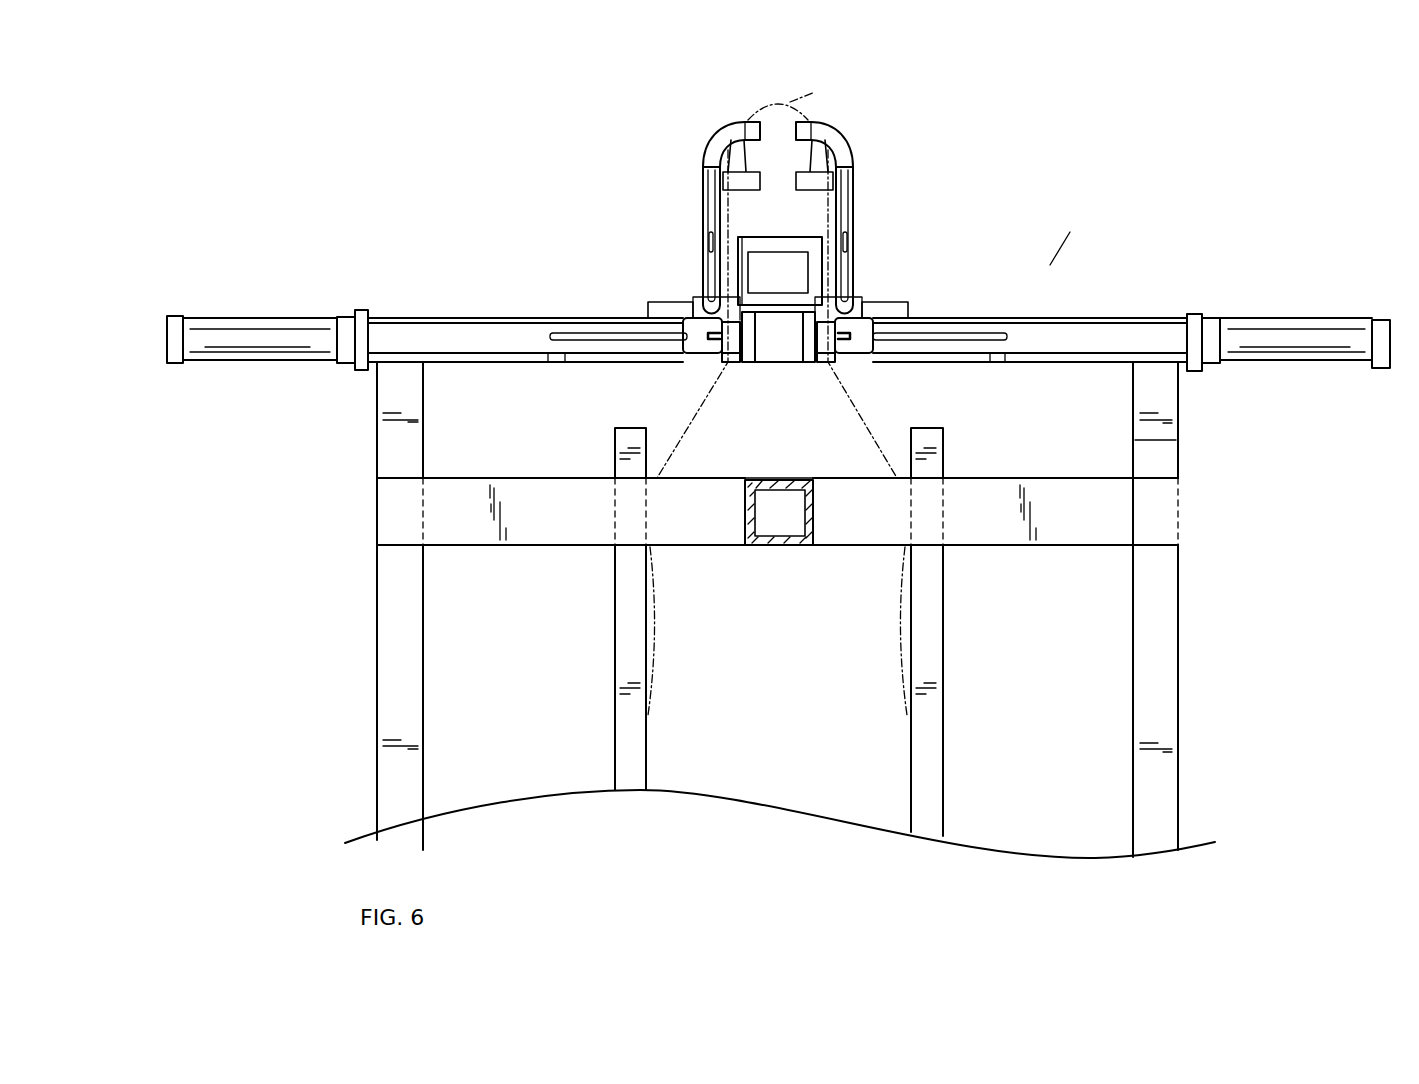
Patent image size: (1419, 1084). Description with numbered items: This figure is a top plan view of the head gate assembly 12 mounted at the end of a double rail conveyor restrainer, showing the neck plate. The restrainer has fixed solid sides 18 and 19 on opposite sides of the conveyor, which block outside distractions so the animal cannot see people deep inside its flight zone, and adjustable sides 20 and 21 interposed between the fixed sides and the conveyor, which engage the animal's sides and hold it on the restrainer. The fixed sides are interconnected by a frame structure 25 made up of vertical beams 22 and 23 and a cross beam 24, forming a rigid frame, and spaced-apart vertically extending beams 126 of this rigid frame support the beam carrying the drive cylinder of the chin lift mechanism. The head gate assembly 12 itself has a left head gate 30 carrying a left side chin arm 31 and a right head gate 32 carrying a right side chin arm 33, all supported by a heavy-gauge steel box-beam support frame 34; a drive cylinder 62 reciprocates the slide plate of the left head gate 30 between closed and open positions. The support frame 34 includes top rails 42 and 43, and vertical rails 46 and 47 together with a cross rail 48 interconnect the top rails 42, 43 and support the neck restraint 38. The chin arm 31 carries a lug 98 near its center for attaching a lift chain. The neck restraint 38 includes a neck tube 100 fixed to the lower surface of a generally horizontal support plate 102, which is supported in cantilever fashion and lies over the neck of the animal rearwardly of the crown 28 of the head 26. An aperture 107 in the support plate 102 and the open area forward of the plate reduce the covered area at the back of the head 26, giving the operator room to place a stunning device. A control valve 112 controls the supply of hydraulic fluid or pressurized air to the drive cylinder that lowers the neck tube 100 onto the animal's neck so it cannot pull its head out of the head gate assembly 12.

The head gate assembly 12 is at (1064, 260).
The fixed solid side 18 is at (385, 724).
The fixed solid side 19 is at (1168, 697).
The adjustable side 20 is at (640, 752).
The adjustable side 21 is at (935, 727).
The vertical beam 22 is at (396, 513).
The vertical beam 23 is at (1165, 512).
The cross beam 24 is at (852, 538).
The frame structure 25 is at (1165, 438).
The head 26 is at (797, 98).
The crown 28 is at (748, 205).
The left head gate 30 is at (791, 195).
The left side chin arm 31 is at (849, 173).
The right head gate 32 is at (698, 130).
The right side chin arm 33 is at (700, 176).
The support frame 34 is at (1117, 312).
The neck restraint 38 is at (690, 264).
The top rail 42 is at (1040, 348).
The top rail 43 is at (475, 345).
The vertical rail 46 is at (866, 360).
The vertical rail 47 is at (695, 360).
The cross rail 48 is at (730, 345).
The drive cylinder 62 is at (1320, 352).
The lug 98 is at (848, 243).
The neck tube 100 is at (898, 303).
The support plate 102 is at (808, 240).
The aperture 107 is at (795, 270).
The control valve 112 is at (710, 235).
The vertically extending beam 126 is at (758, 548).